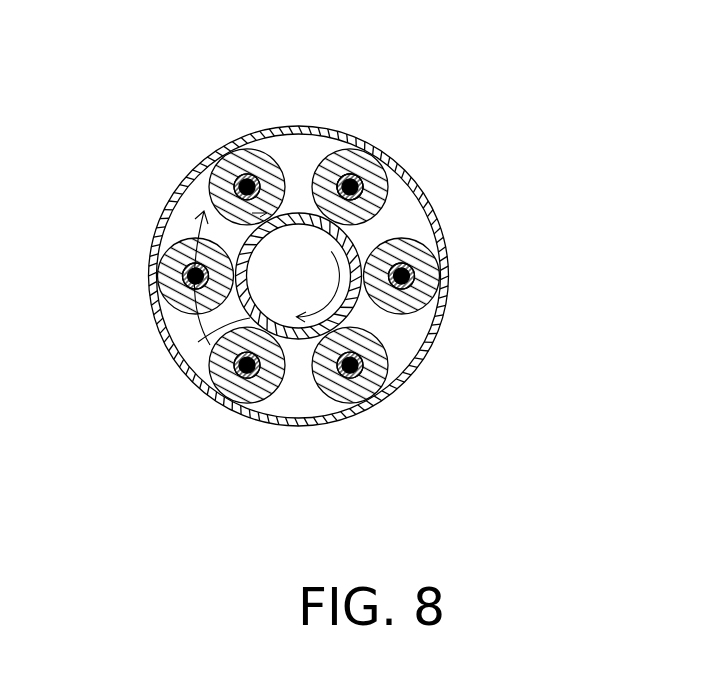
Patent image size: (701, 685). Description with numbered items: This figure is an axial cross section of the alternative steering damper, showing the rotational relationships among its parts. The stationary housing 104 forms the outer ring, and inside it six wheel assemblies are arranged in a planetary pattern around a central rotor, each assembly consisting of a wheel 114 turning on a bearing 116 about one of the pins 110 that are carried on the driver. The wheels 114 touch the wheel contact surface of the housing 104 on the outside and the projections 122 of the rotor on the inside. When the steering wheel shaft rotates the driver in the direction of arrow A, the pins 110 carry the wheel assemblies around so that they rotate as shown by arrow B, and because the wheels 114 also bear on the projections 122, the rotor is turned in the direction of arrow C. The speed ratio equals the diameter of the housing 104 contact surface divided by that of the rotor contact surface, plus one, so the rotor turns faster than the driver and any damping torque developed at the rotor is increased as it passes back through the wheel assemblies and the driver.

The stationary housing 104 is at (411, 381).
The pins 110 is at (410, 288).
The wheel assembly wheels 114 is at (325, 158).
The bearings 116 is at (358, 173).
The projections 122 is at (361, 242).
The arrow A is at (198, 342).
The arrow B is at (212, 188).
The arrow C is at (317, 314).